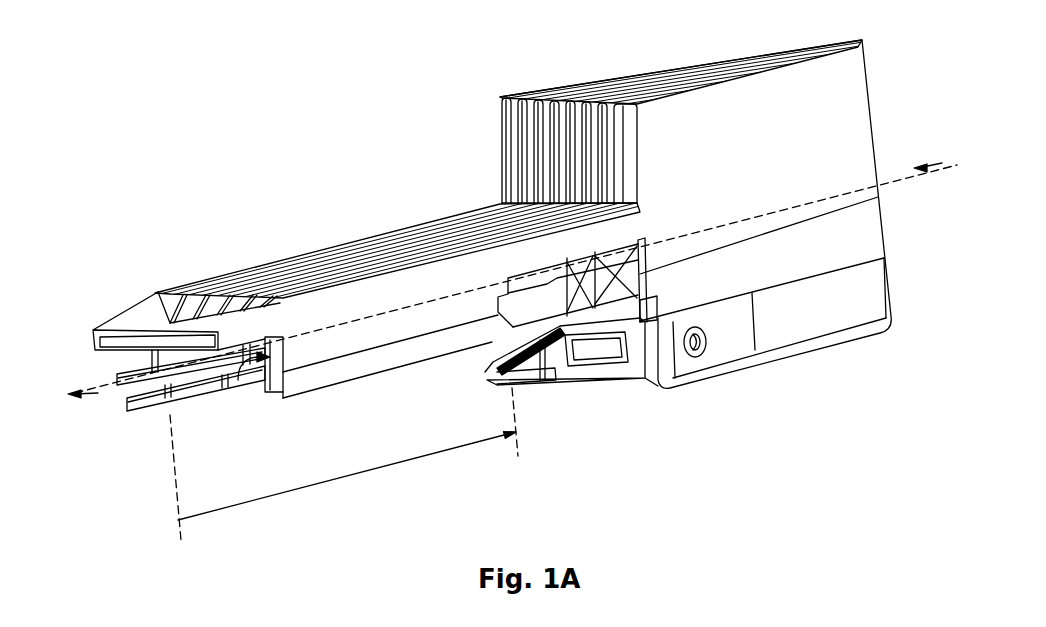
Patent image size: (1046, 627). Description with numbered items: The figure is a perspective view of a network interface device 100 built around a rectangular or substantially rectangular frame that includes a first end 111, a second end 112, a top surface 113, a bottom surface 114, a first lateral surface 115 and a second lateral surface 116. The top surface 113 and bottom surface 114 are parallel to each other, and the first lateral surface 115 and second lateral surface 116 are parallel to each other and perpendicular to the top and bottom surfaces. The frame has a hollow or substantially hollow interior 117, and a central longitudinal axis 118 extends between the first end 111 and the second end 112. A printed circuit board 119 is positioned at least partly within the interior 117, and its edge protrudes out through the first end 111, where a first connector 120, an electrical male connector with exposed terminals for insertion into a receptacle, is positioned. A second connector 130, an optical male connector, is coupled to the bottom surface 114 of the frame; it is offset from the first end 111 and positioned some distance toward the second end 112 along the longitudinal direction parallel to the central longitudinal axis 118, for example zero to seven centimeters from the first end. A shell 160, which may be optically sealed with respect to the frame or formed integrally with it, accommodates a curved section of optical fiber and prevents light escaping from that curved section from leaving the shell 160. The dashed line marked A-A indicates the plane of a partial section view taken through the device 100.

The network interface device 100 is at (112, 44).
The first end 111 is at (123, 347).
The second end 112 is at (879, 199).
The top surface 113 is at (334, 260).
The bottom surface 114 is at (345, 383).
The first lateral surface 115 is at (447, 298).
The second lateral surface 116 is at (232, 278).
The interior 117 is at (248, 383).
The central longitudinal axis 118 is at (103, 385).
The printed circuit board 119 is at (224, 374).
The first connector 120 is at (172, 403).
The second connector 130 is at (587, 363).
The shell 160 is at (773, 323).